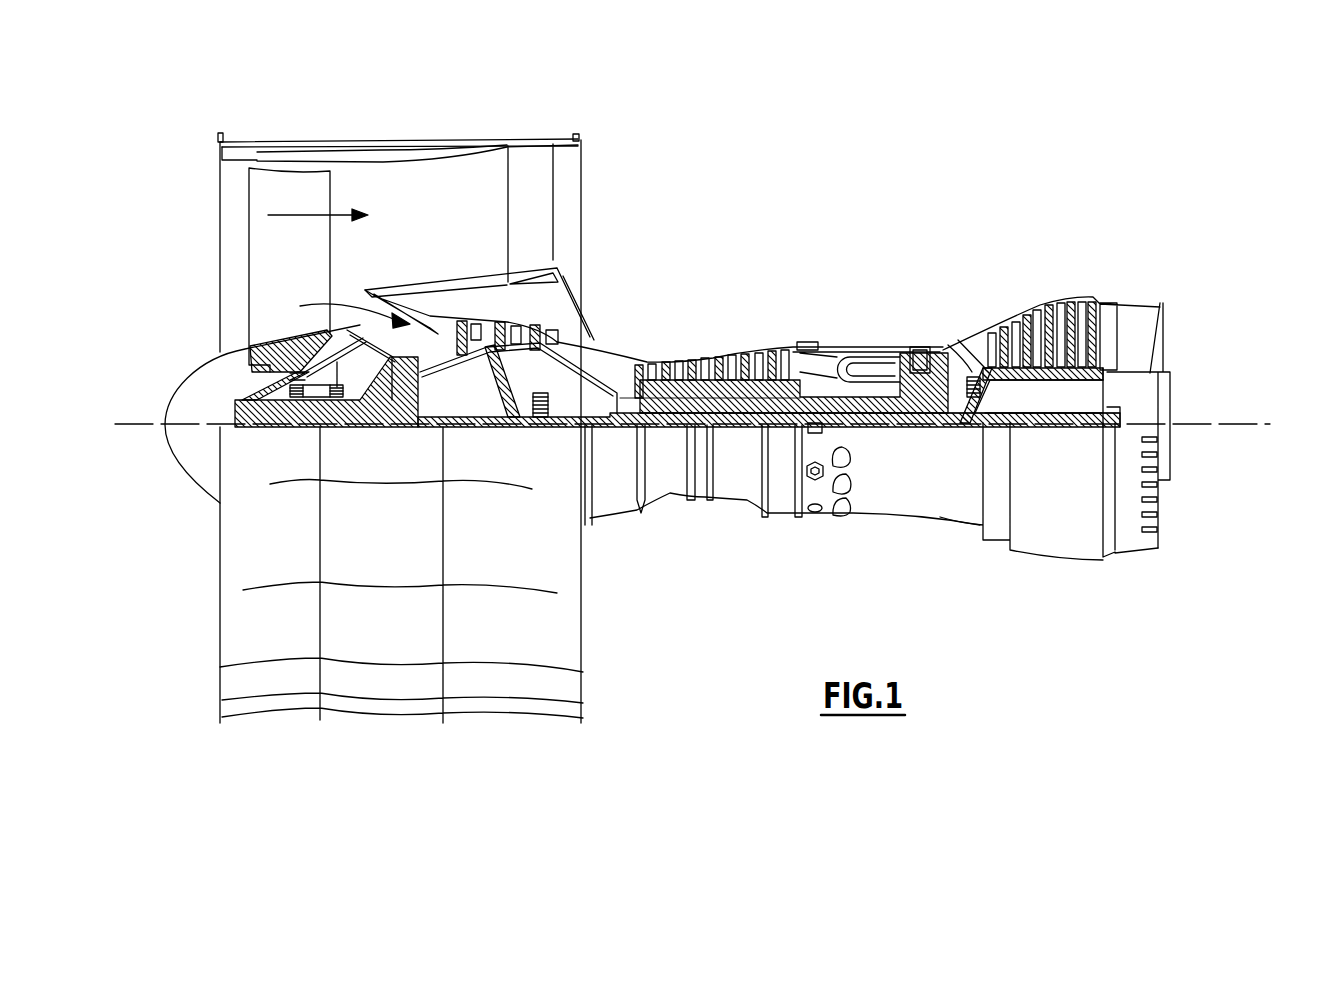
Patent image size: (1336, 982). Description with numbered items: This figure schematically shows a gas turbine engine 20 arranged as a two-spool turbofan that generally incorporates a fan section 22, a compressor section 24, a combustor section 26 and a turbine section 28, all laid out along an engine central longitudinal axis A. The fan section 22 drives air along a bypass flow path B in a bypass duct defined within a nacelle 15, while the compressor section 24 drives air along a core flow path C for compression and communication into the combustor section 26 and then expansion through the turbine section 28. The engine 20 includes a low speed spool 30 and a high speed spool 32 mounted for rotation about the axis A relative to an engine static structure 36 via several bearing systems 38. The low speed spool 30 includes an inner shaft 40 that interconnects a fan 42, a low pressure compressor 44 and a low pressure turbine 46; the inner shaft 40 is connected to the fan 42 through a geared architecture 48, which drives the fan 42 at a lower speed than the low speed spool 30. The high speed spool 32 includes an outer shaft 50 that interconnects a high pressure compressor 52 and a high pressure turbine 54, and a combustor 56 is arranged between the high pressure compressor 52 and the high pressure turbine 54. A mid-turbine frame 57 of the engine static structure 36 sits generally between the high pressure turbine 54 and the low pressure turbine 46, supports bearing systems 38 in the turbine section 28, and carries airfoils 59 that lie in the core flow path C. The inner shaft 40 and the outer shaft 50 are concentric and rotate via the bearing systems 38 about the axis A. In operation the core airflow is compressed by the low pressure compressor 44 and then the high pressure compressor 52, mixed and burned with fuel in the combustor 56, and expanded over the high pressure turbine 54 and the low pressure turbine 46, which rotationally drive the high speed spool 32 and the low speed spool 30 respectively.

The nacelle 15 is at (404, 146).
The gas turbine engine 20 is at (863, 188).
The fan section 22 is at (330, 125).
The compressor section 24 is at (632, 330).
The combustor section 26 is at (855, 325).
The turbine section 28 is at (1003, 282).
The low speed spool 30 is at (740, 438).
The high speed spool 32 is at (777, 387).
The engine static structure 36 is at (780, 522).
The bearing systems 38 is at (548, 413).
The inner shaft 40 is at (600, 422).
The fan 42 is at (308, 268).
The low pressure compressor 44 is at (507, 332).
The low pressure turbine 46 is at (1048, 310).
The geared architecture 48 is at (408, 407).
The outer shaft 50 is at (860, 413).
The high pressure compressor 52 is at (714, 388).
The high pressure turbine 54 is at (913, 350).
The combustor 56 is at (855, 367).
The mid-turbine frame 57 is at (966, 340).
The airfoils 59 is at (992, 388).
The engine central longitudinal axis A is at (1253, 424).
The bypass flow path B is at (301, 213).
The core flow path C is at (347, 308).